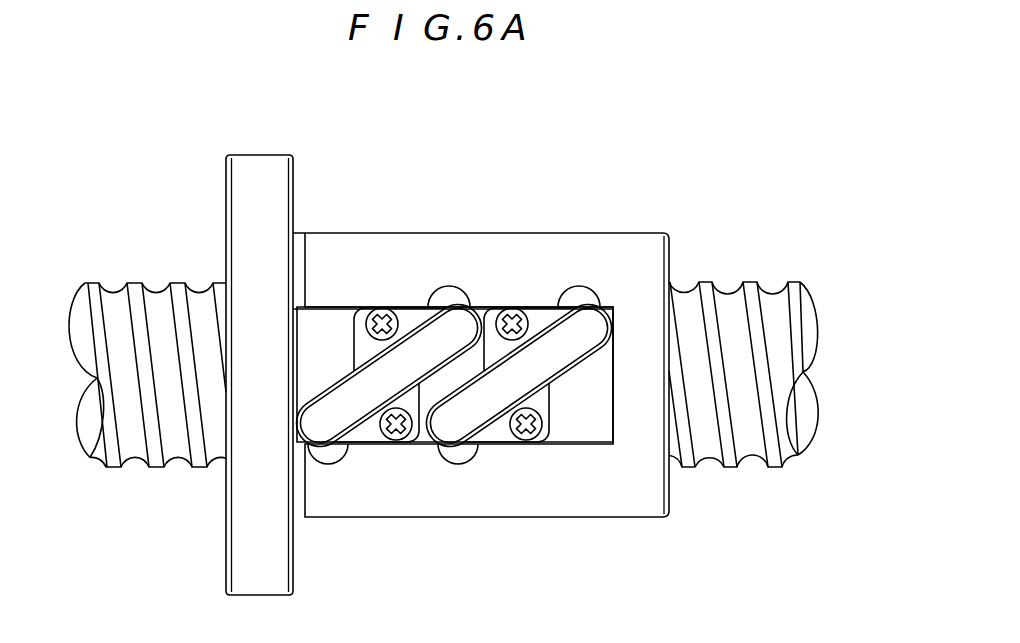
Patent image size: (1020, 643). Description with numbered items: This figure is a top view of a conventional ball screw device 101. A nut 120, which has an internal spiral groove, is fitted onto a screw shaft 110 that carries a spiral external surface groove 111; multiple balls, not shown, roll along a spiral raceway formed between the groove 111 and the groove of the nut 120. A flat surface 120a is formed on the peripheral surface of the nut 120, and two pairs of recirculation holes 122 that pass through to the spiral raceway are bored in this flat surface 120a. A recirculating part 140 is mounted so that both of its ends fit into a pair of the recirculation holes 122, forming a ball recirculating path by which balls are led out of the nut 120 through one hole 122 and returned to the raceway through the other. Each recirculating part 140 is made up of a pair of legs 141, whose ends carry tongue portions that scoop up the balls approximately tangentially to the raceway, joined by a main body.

The ball screw device 101 is at (447, 340).
The screw shaft 110 is at (443, 370).
The spiral external surface groove 111 is at (755, 456).
The nut 120 is at (632, 492).
The flat surface 120a is at (328, 338).
The recirculation holes 122 is at (330, 467).
The recirculating part 140 is at (420, 355).
The legs 141 is at (448, 292).